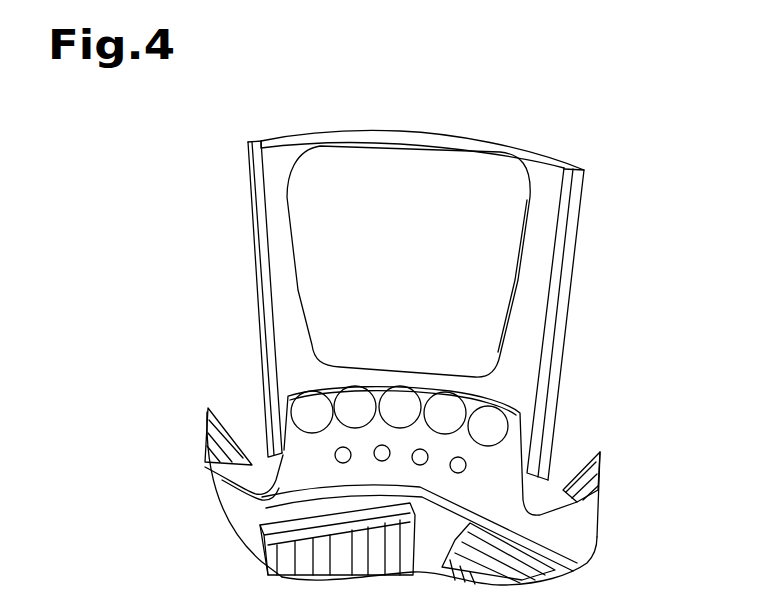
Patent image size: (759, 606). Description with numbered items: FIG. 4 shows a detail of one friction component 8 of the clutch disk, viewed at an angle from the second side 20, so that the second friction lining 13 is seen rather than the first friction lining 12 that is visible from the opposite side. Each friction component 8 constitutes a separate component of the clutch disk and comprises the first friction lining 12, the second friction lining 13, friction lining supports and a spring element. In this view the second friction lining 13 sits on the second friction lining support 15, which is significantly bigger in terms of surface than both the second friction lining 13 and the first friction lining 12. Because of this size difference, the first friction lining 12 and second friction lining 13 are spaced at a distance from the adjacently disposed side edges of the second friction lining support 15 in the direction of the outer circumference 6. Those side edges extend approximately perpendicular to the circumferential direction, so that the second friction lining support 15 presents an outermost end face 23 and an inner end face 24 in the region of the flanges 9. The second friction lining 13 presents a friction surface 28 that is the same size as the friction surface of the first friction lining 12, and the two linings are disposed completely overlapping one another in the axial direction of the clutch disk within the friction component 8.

The outer circumference 6 is at (558, 482).
The friction component 8 is at (565, 112).
The flange 9 is at (328, 463).
The first friction lining 12 is at (253, 358).
The second friction lining 13 is at (525, 170).
The second friction lining support 15 is at (597, 170).
The second side 20 is at (245, 211).
The outermost end face 23 is at (432, 130).
The inner end face 24 is at (296, 438).
The friction surface 28 is at (442, 183).